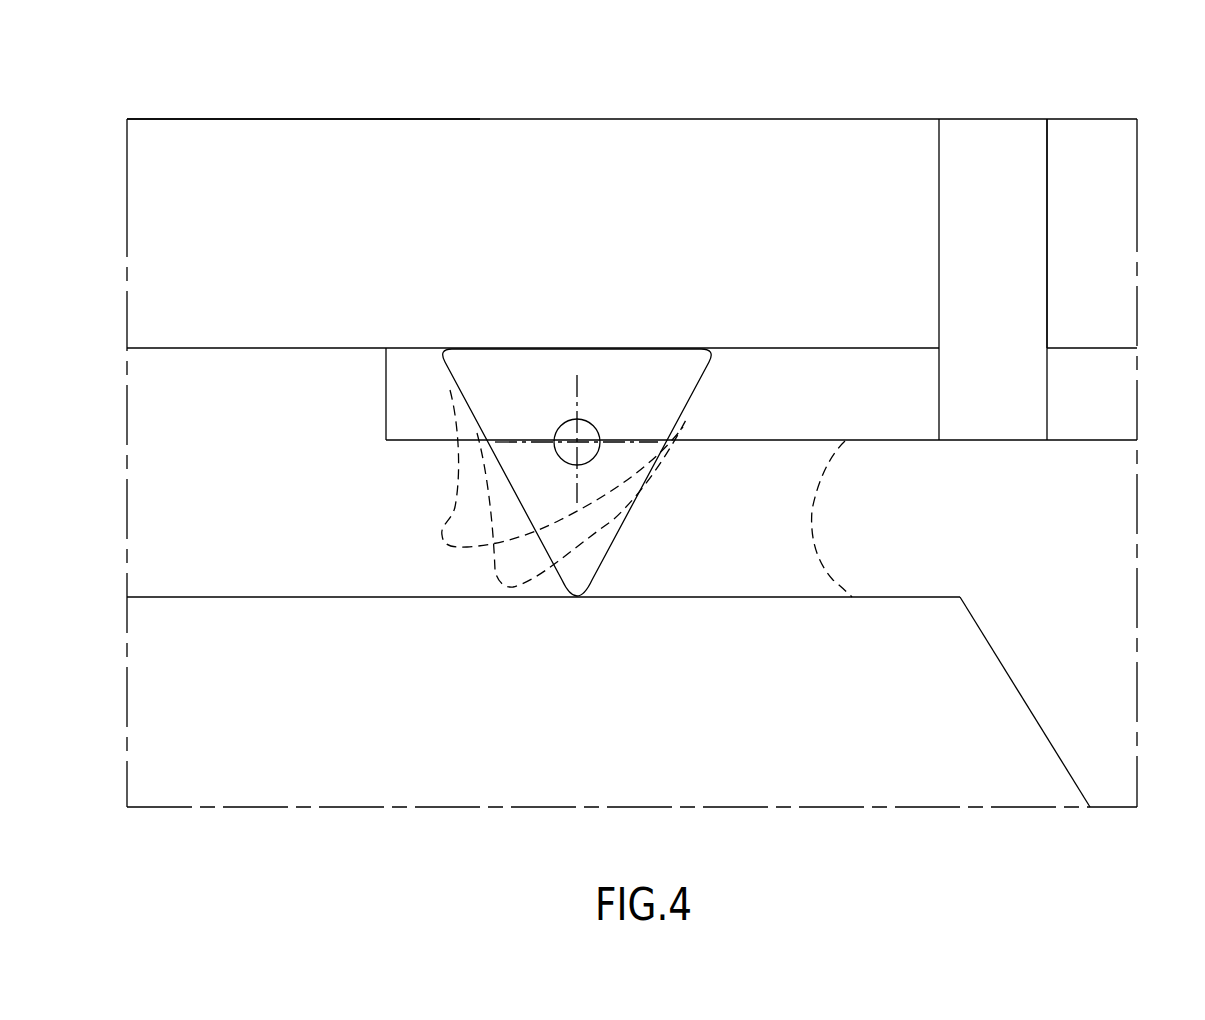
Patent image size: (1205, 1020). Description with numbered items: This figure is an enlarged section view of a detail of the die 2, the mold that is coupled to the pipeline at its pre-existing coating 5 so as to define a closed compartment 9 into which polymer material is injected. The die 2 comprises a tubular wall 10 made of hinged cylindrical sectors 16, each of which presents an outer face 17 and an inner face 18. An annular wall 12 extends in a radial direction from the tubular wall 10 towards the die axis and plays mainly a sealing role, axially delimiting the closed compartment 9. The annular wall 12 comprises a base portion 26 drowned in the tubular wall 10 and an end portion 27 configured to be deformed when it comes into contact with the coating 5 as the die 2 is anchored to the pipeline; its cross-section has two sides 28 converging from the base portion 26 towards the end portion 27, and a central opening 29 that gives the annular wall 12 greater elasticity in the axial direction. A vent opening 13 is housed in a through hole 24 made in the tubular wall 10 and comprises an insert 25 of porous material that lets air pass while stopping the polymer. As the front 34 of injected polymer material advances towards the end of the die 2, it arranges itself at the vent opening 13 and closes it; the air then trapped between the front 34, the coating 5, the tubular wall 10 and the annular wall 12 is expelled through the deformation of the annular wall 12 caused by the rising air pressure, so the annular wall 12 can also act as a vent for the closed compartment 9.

The die 2 is at (1088, 95).
The coating 5 is at (578, 731).
The closed compartment 9 is at (767, 462).
The tubular wall 10 is at (577, 115).
The annular wall 12 is at (697, 497).
The vent opening 13 is at (1025, 75).
The cylindrical sector 16 is at (213, 138).
The outer face 17 is at (430, 118).
The inner face 18 is at (883, 442).
The through hole 24 is at (940, 165).
The insert of porous material 25 is at (1033, 253).
The base portion 26 is at (652, 387).
The end portion 27 is at (575, 573).
The side 28 is at (507, 490).
The central opening 29 is at (577, 419).
The front 34 is at (822, 567).